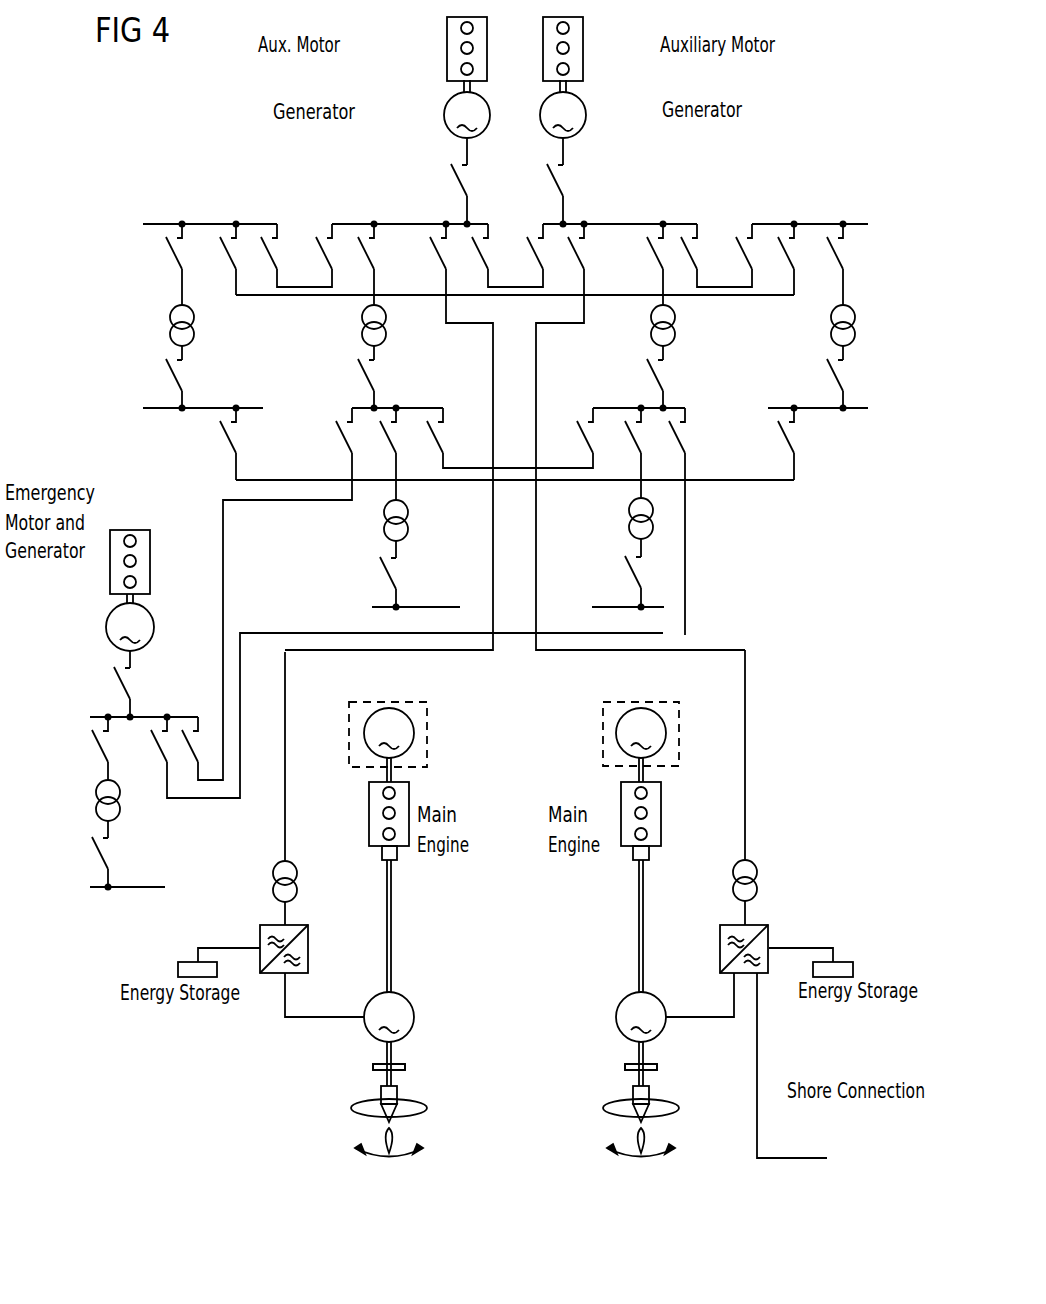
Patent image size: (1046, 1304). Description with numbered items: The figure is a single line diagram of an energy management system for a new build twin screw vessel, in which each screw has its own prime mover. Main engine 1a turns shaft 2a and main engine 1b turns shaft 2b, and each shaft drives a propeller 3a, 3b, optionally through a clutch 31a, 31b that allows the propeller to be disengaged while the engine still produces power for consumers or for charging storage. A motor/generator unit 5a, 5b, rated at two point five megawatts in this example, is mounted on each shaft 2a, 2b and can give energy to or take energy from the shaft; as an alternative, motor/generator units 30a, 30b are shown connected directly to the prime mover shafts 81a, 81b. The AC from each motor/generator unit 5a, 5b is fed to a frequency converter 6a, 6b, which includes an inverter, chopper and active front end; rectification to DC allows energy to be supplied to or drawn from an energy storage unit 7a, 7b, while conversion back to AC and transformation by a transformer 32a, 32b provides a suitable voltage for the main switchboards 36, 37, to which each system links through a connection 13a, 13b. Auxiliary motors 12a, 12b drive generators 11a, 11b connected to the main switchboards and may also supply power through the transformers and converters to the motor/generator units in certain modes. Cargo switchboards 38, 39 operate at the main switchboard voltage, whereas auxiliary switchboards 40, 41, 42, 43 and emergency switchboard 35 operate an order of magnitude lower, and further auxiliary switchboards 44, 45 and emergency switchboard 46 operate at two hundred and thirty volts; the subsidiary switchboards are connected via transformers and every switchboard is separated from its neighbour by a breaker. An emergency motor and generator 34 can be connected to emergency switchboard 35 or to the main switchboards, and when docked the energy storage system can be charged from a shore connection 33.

The auxiliary motor 12a is at (447, 47).
The generator 11a is at (444, 115).
The auxiliary motor 12b is at (583, 47).
The generator 11b is at (586, 115).
The cargo switchboard 38 is at (158, 222).
The main switchboard 36 is at (400, 222).
The main switchboard 37 is at (691, 222).
The cargo switchboard 39 is at (820, 222).
The auxiliary switchboard 40 is at (261, 405).
The auxiliary switchboard 41 is at (431, 405).
The auxiliary switchboard 42 is at (609, 405).
The auxiliary switchboard 43 is at (775, 405).
The auxiliary switchboard 44 is at (420, 605).
The auxiliary switchboard 45 is at (613, 605).
The emergency motor and generator 34 is at (131, 528).
The emergency switchboard 35 is at (151, 715).
The emergency switchboard 46 is at (138, 885).
The motor/generator unit 30a is at (427, 725).
The motor/generator unit 30b is at (603, 727).
The prime mover shaft 81a is at (395, 770).
The prime mover shaft 81b is at (637, 768).
The main engine 1a is at (369, 815).
The main engine 1b is at (662, 815).
The connection 13a is at (285, 832).
The connection 13b is at (745, 740).
The transformer 32a is at (273, 875).
The transformer 32b is at (759, 870).
The shaft 2a is at (393, 926).
The shaft 2b is at (637, 928).
The frequency converter 6a is at (308, 948).
The frequency converter 6b is at (720, 948).
The energy storage unit 7a is at (189, 960).
The energy storage unit 7b is at (837, 959).
The motor/generator unit 5a is at (414, 1013).
The motor/generator unit 5b is at (616, 1015).
The clutch 31a is at (373, 1067).
The clutch 31b is at (625, 1067).
The propeller 3a is at (351, 1108).
The propeller 3b is at (603, 1108).
The shore connection 33 is at (790, 1156).